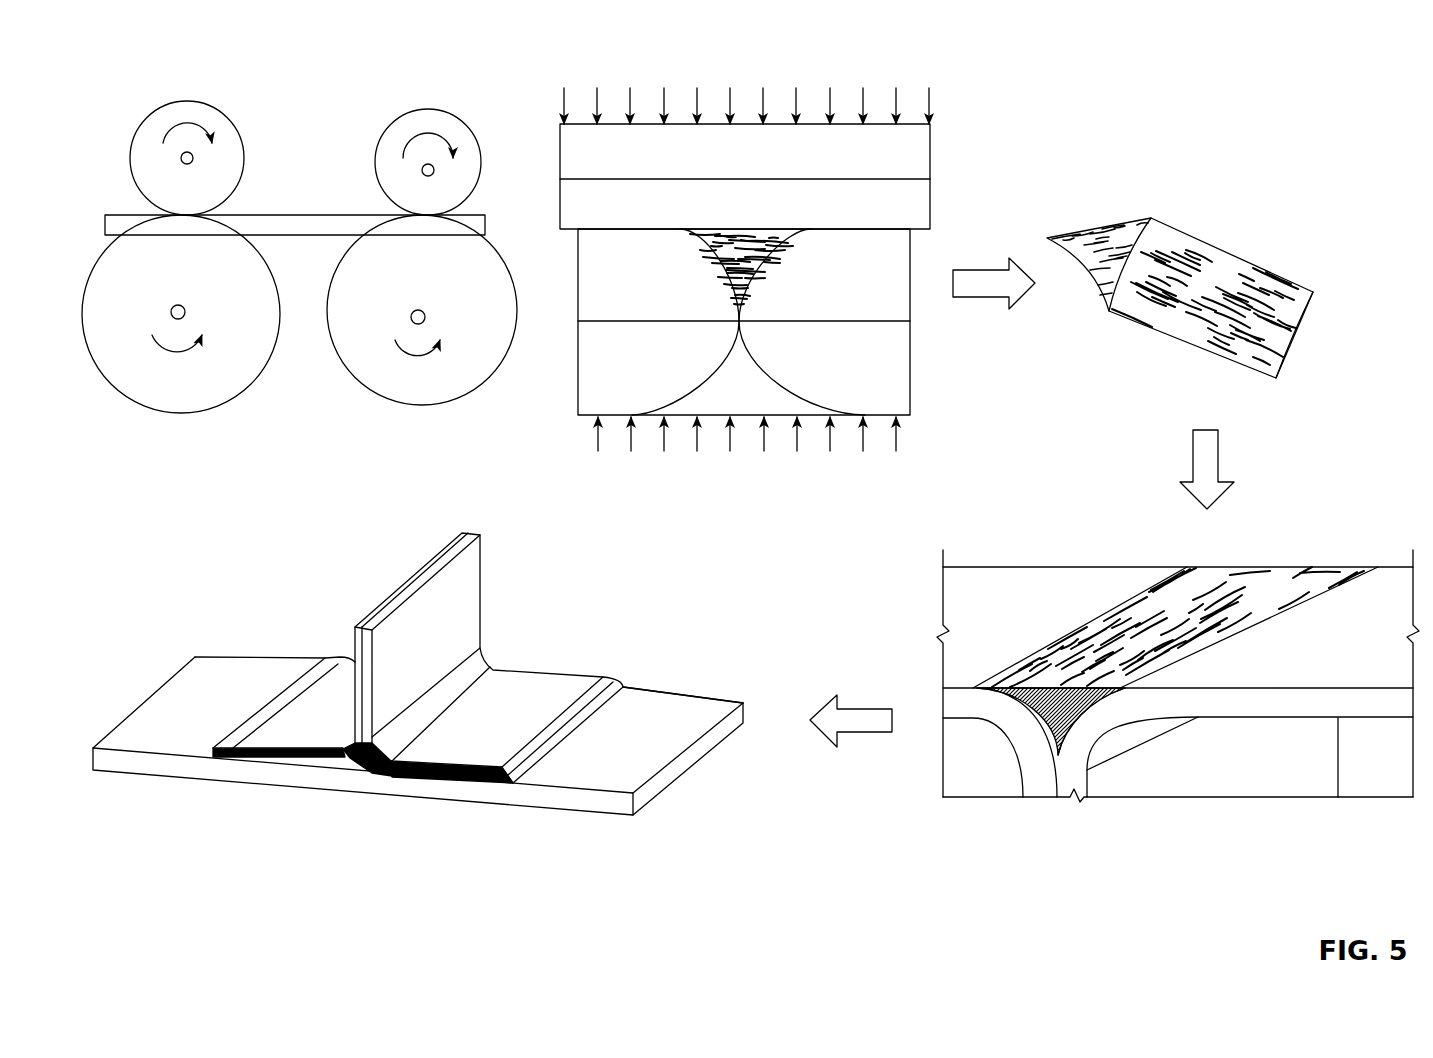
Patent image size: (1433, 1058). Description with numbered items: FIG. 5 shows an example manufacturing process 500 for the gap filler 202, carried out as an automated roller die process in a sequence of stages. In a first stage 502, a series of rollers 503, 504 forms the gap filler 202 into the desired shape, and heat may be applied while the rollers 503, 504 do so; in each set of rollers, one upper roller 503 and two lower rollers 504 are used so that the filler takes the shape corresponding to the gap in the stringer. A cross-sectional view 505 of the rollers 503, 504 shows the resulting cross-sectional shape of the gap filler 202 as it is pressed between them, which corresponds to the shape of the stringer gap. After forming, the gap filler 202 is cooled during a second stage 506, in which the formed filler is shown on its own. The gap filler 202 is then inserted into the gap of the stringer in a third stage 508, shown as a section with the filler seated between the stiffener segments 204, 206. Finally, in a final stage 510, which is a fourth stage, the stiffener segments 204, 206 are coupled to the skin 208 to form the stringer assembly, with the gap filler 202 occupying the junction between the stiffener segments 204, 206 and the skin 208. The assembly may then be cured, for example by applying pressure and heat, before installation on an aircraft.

The manufacturing process 500 is at (1120, 86).
The first stage 502 is at (430, 83).
The upper roller 503 is at (362, 153).
The lower rollers 504 is at (255, 388).
The cross-sectional view 505 is at (942, 69).
The second stage 506 is at (1199, 161).
The third stage 508 is at (1037, 508).
The final stage 510 is at (553, 573).
The gap filler 202 is at (773, 256).
The stiffener segment 204 is at (1403, 572).
The stiffener segment 206 is at (1095, 573).
The skin 208 is at (602, 813).